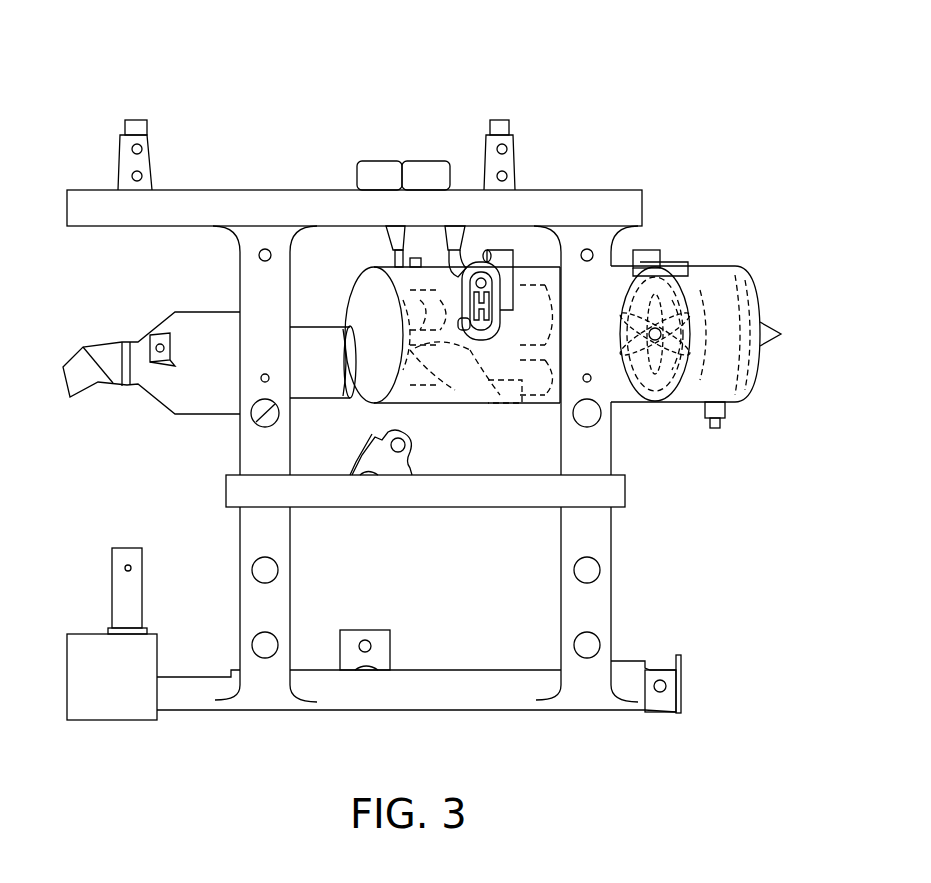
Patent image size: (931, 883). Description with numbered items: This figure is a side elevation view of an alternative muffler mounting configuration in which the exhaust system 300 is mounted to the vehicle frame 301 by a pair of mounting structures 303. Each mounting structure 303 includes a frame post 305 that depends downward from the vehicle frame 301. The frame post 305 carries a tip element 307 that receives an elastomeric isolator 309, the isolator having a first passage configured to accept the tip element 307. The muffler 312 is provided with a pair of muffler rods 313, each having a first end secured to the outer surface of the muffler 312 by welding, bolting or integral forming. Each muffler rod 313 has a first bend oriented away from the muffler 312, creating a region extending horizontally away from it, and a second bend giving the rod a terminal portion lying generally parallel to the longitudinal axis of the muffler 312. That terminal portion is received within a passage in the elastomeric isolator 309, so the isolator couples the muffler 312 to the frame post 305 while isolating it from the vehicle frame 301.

The exhaust system 300 is at (670, 215).
The vehicle frame 301 is at (268, 208).
The mounting structures 303 is at (380, 243).
The frame post 305 is at (424, 262).
The tip element 307 is at (437, 345).
The elastomeric isolator 309 is at (458, 262).
The muffler 312 is at (766, 277).
The muffler rod 313 is at (503, 392).